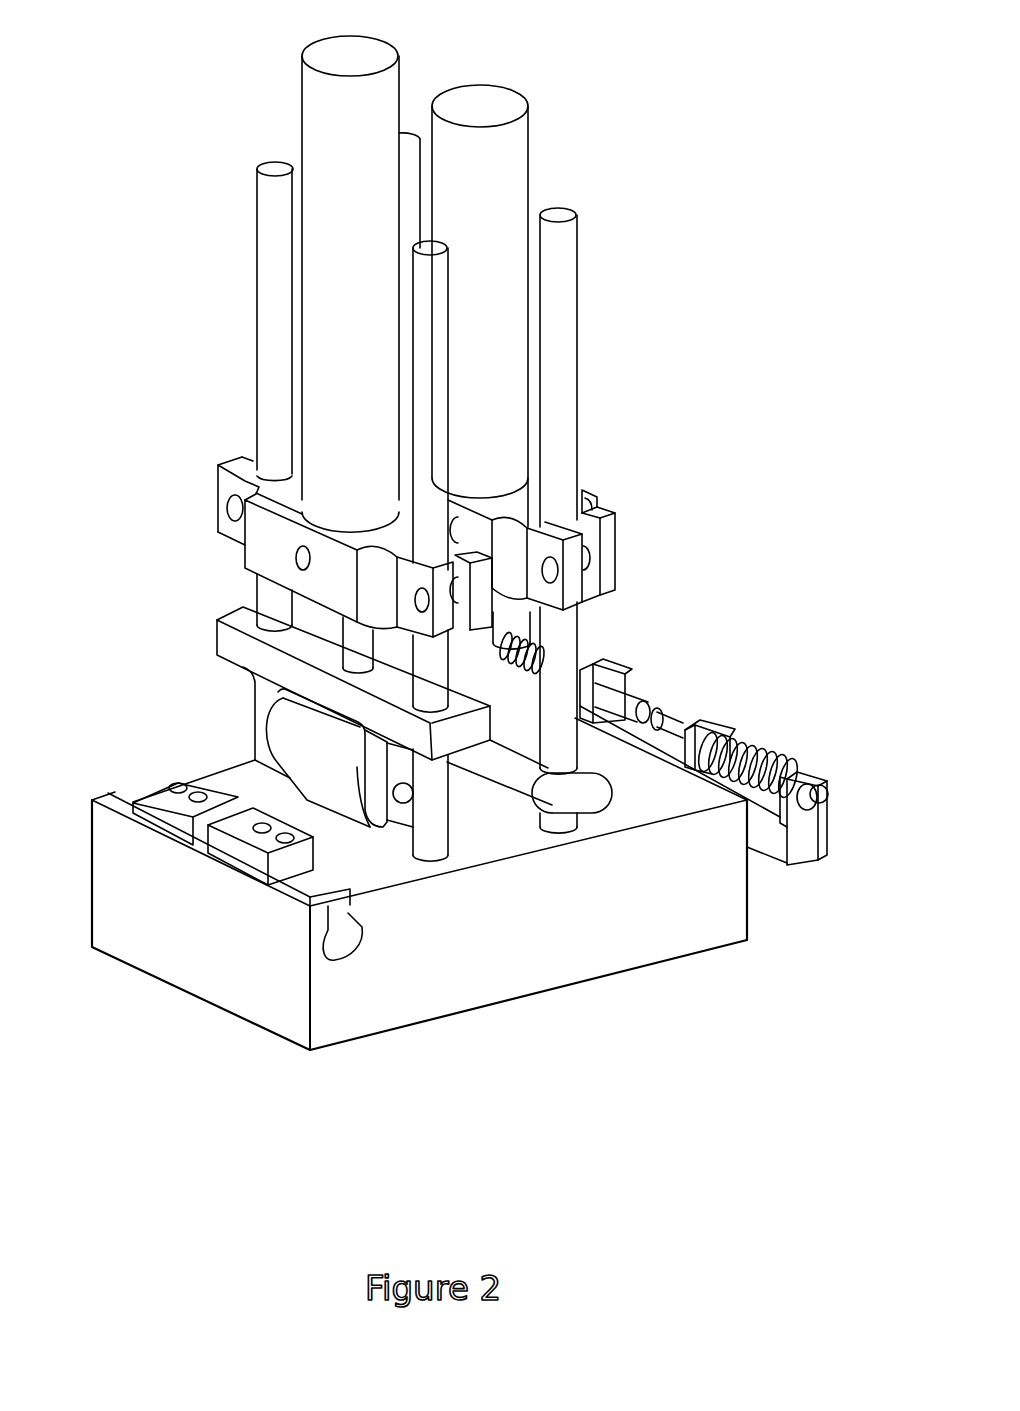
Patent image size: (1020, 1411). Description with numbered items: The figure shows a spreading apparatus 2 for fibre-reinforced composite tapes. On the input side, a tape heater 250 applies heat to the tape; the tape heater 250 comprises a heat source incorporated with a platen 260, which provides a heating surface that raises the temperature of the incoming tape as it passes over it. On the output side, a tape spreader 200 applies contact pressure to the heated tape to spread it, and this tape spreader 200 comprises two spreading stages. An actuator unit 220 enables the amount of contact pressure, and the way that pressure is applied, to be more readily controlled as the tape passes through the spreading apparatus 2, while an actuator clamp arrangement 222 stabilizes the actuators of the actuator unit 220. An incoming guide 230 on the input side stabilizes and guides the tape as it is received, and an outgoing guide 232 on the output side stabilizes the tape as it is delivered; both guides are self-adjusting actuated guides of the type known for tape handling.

The spreading apparatus 2 is at (720, 197).
The tape spreader 200 is at (202, 664).
The actuator unit 220 is at (474, 202).
The actuator clamp arrangement 222 is at (280, 542).
The incoming guide 230 is at (225, 800).
The outgoing guide 232 is at (646, 683).
The tape heater 250 is at (664, 992).
The platen 260 is at (474, 941).